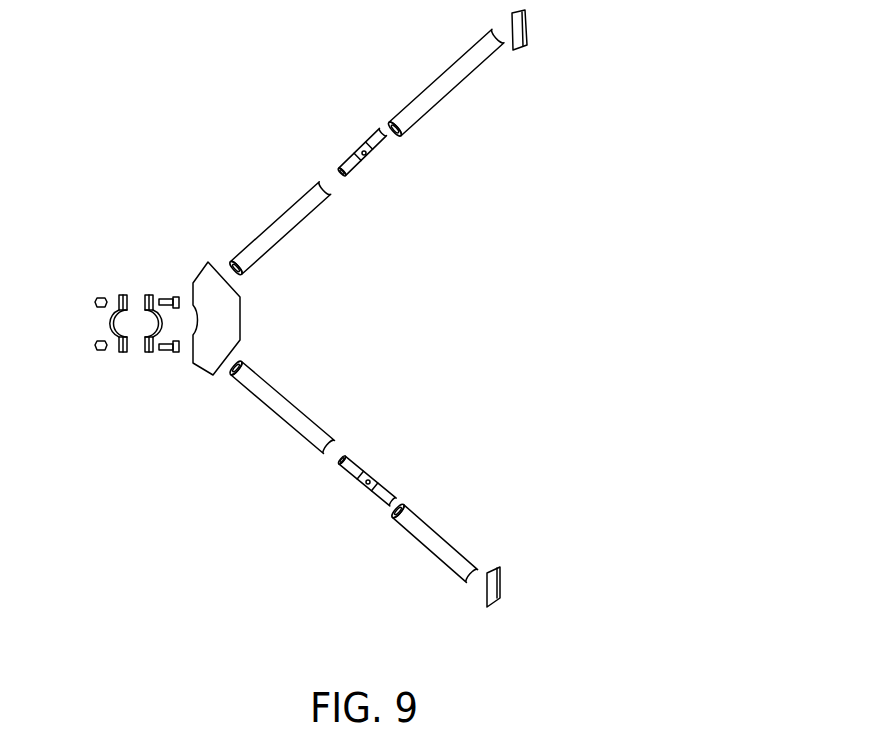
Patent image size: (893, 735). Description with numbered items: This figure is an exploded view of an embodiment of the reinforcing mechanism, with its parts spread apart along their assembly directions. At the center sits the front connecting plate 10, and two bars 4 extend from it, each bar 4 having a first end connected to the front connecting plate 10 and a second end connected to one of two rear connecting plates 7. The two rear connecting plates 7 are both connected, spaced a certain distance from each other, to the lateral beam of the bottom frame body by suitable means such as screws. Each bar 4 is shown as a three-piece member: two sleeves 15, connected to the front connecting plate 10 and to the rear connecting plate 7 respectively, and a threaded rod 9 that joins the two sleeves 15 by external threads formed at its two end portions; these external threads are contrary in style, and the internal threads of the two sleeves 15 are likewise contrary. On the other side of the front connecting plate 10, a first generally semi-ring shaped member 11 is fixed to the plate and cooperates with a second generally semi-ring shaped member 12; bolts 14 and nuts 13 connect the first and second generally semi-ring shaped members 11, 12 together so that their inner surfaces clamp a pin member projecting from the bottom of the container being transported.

The bar 4 is at (289, 220).
The rear connecting plate 7 is at (507, 55).
The threaded rod 9 is at (377, 150).
The front connecting plate 10 is at (215, 347).
The first generally semi-ring shaped member 11 is at (142, 353).
The second generally semi-ring shaped member 12 is at (117, 355).
The nut 13 is at (98, 353).
The bolt 14 is at (168, 353).
The sleeve 15 is at (293, 435).